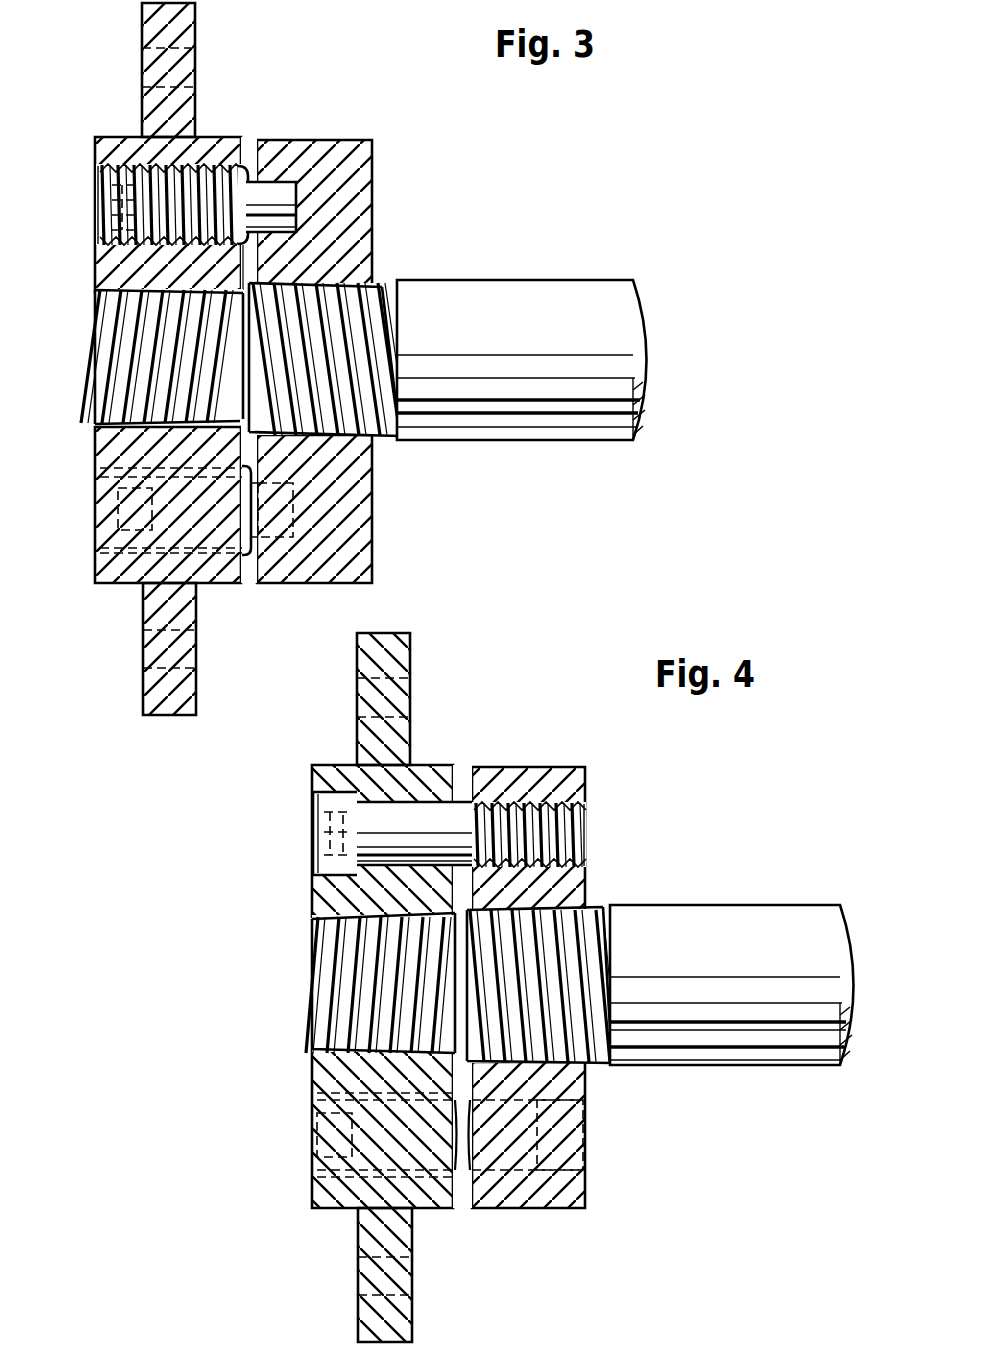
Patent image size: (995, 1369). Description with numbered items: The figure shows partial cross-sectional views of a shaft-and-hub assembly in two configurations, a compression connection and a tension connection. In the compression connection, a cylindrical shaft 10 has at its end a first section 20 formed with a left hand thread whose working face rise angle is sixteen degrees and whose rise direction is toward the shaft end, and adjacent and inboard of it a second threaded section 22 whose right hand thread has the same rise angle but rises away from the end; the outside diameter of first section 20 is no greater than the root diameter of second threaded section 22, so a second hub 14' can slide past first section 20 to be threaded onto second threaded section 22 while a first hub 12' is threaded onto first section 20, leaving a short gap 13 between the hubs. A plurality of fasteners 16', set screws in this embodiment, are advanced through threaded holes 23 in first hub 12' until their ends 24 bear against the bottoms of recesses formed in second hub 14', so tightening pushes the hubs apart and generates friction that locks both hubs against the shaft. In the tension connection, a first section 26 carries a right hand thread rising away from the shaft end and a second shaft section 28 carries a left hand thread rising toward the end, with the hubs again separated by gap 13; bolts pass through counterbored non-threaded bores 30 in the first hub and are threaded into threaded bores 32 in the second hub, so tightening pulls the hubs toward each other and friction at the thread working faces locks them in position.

In FIG. 3, the cylindrical shaft 10 is at (512, 300).
In FIG. 4, the cylindrical shaft 10 is at (712, 930).
In FIG. 3, the first hub 12' is at (222, 359).
In FIG. 3, the gap 13 is at (245, 152).
In FIG. 4, the gap 13 is at (460, 784).
In FIG. 3, the second hub 14' is at (377, 361).
In FIG. 3, the fasteners 16' is at (128, 347).
In FIG. 3, the first section 20 is at (150, 345).
In FIG. 3, the second threaded section 22 is at (345, 325).
In FIG. 3, the threaded holes 23 is at (107, 205).
In FIG. 3, the ends 24 is at (267, 192).
In FIG. 4, the first section 26 is at (342, 978).
In FIG. 4, the second shaft section 28 is at (568, 952).
In FIG. 4, the counterbored non-threaded bores 30 is at (310, 812).
In FIG. 4, the threaded bores 32 is at (585, 830).